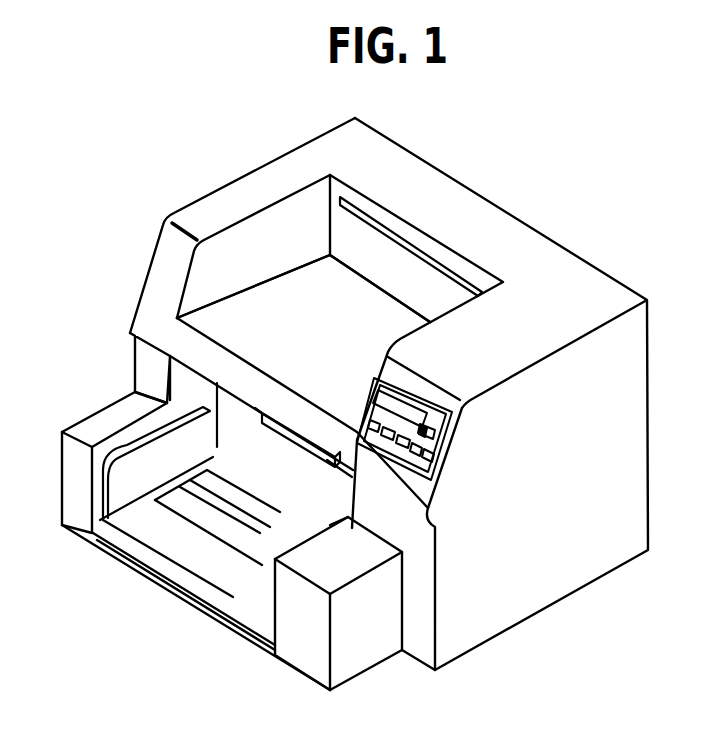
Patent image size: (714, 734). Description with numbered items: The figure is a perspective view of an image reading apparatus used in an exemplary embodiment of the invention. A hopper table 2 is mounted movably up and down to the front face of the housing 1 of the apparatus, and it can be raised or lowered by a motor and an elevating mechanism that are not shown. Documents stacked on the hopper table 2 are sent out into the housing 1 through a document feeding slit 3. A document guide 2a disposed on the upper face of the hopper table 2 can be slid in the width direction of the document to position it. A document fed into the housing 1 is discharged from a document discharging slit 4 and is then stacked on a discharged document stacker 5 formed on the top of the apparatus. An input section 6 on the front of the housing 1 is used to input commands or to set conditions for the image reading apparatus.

The housing 1 is at (527, 243).
The hopper table 2 is at (260, 605).
The document guide 2a is at (273, 575).
The document feeding slit 3 is at (217, 407).
The document discharging slit 4 is at (400, 233).
The discharged document stacker 5 is at (283, 306).
The input section 6 is at (432, 437).